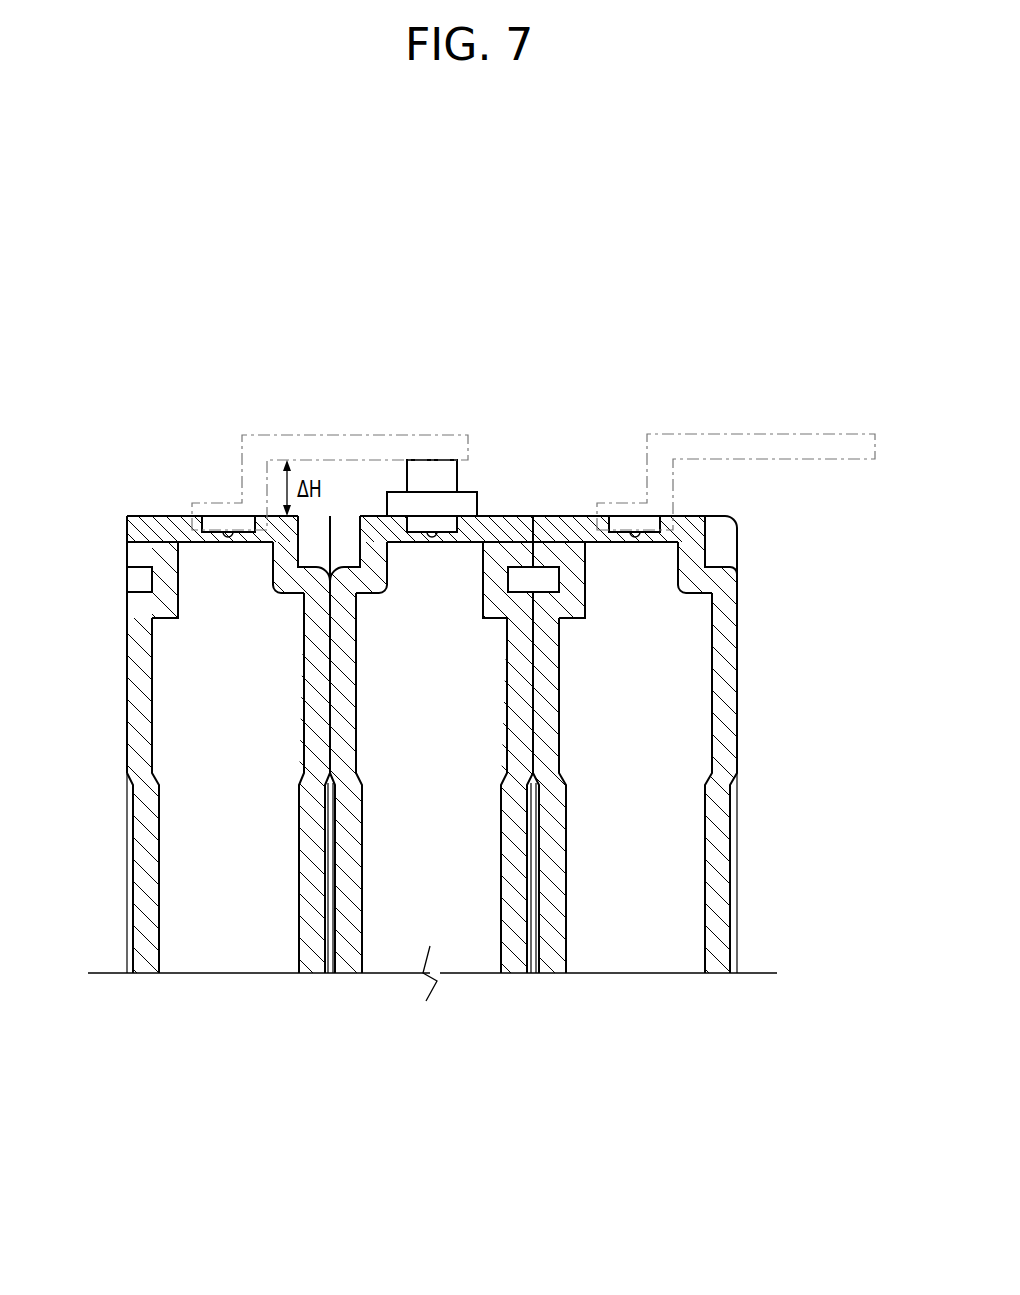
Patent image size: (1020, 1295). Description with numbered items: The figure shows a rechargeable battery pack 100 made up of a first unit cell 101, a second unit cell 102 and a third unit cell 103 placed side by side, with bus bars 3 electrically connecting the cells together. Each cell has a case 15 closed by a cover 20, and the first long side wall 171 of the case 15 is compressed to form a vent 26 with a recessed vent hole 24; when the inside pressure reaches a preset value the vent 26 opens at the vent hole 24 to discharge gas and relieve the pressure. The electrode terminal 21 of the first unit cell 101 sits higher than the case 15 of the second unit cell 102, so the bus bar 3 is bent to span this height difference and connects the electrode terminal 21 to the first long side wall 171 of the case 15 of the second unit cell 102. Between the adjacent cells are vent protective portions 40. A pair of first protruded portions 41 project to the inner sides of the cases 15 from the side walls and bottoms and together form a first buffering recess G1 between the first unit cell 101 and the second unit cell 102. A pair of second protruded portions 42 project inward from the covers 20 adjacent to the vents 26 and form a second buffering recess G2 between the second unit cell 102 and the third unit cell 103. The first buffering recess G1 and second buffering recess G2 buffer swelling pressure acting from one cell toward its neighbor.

The rechargeable battery pack 100 is at (525, 317).
The bus bar 3 is at (385, 433).
The electrode terminal 21 is at (432, 474).
The first long side wall 171 is at (160, 527).
The vent hole 24 is at (217, 527).
The vent 26 is at (216, 543).
The first buffering recess G1 is at (320, 528).
The second buffering recess G2 is at (543, 572).
The first protruded portion 41 is at (285, 557).
The second protruded portion 42 is at (168, 592).
The vent protective portion 40 is at (608, 1200).
The cover 20 is at (146, 987).
The case 15 is at (348, 986).
The first unit cell 101 is at (224, 1006).
The second unit cell 102 is at (421, 1006).
The third unit cell 103 is at (640, 1006).